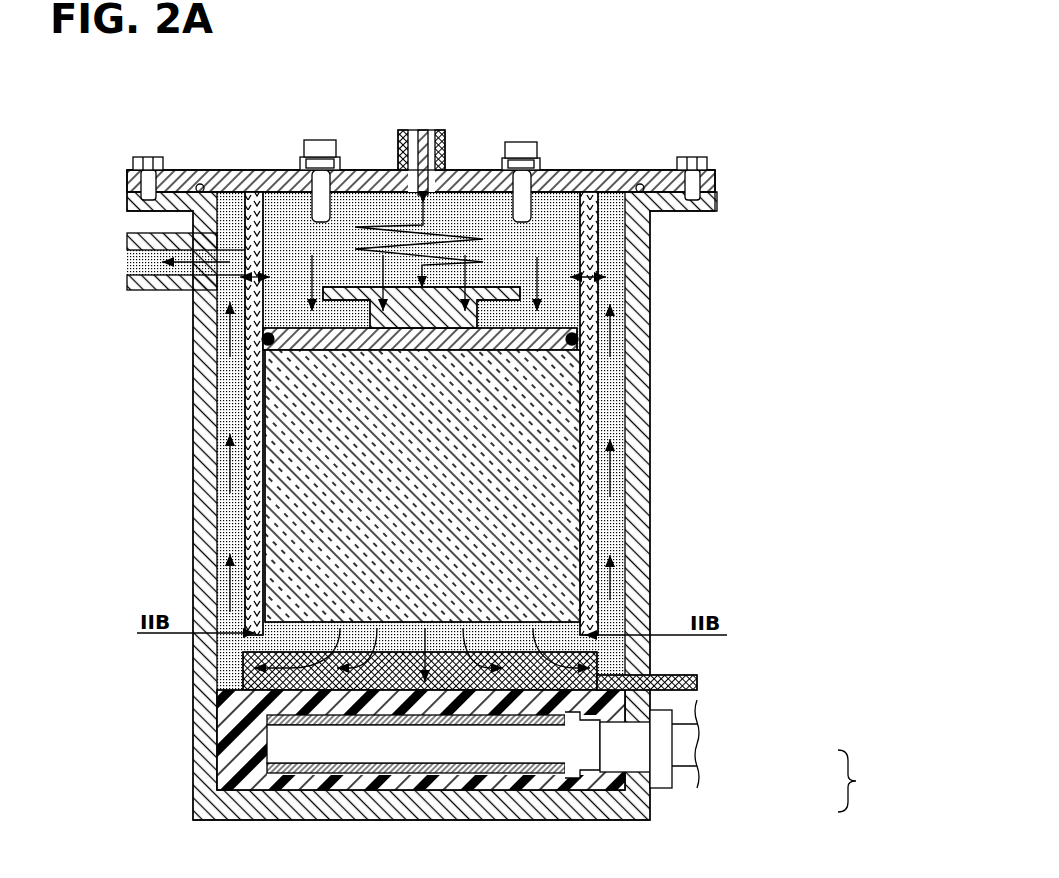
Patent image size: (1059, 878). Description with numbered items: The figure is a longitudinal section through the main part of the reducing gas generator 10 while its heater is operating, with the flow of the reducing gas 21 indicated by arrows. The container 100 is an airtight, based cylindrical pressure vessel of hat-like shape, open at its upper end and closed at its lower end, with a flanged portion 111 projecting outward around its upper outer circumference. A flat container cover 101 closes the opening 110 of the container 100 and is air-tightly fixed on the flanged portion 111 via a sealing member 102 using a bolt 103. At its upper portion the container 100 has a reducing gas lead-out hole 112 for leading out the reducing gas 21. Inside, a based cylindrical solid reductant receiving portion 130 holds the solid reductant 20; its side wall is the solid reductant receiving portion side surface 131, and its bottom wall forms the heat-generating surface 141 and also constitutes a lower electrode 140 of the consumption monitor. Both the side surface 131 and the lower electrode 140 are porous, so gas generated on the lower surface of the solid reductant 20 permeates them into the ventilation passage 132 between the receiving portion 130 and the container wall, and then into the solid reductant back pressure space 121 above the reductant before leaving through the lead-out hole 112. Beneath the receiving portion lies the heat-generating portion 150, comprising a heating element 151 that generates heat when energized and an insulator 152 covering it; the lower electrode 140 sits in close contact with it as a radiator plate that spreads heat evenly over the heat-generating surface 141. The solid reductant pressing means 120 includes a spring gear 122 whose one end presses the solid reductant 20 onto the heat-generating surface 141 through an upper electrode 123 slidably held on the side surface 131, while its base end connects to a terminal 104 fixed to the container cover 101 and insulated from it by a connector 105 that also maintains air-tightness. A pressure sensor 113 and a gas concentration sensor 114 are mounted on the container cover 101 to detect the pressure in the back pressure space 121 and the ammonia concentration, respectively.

The reducing gas generator 10 is at (668, 93).
The solid reductant 20 is at (563, 433).
The reducing gas 21 is at (590, 625).
The container 100 is at (640, 497).
The container cover 101 is at (276, 172).
The sealing member 102 is at (203, 185).
The bolt 103 is at (148, 157).
The terminal 104 is at (444, 132).
The connector 105 is at (425, 130).
The opening 110 is at (573, 182).
The flanged portion 111 is at (715, 190).
The reducing gas lead-out hole 112 is at (157, 290).
The pressure sensor 113 is at (337, 140).
The gas concentration sensor 114 is at (528, 142).
The solid reductant pressing means 120 is at (582, 230).
The solid reductant back pressure space 121 is at (550, 243).
The spring gear 122 is at (535, 263).
The upper electrode 123 is at (578, 330).
The solid reductant receiving portion 130 is at (602, 380).
The solid reductant receiving portion side surface 131 is at (597, 580).
The ventilation passage 132 is at (615, 543).
The lower electrode 140 is at (675, 706).
The heat-generating surface 141 is at (697, 662).
The heat-generating portion 150 is at (871, 781).
The heating element 151 is at (545, 783).
The insulator 152 is at (560, 748).